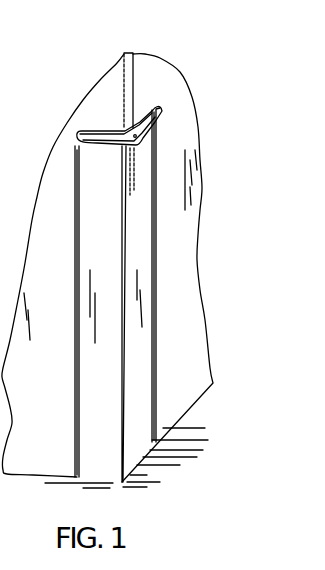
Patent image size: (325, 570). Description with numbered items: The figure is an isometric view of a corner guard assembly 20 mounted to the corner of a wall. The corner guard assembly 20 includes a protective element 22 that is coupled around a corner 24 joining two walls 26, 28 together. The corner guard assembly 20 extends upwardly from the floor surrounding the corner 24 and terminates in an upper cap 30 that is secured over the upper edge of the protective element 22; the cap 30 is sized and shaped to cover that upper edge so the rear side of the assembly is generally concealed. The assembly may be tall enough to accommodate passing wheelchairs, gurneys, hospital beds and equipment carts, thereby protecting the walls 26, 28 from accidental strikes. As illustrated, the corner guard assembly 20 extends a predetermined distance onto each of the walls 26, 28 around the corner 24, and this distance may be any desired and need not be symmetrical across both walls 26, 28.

The corner guard assembly 20 is at (188, 292).
The protective element 22 is at (142, 242).
The corner 24 is at (126, 57).
The wall 26 is at (97, 112).
The wall 28 is at (155, 85).
The upper cap 30 is at (118, 92).